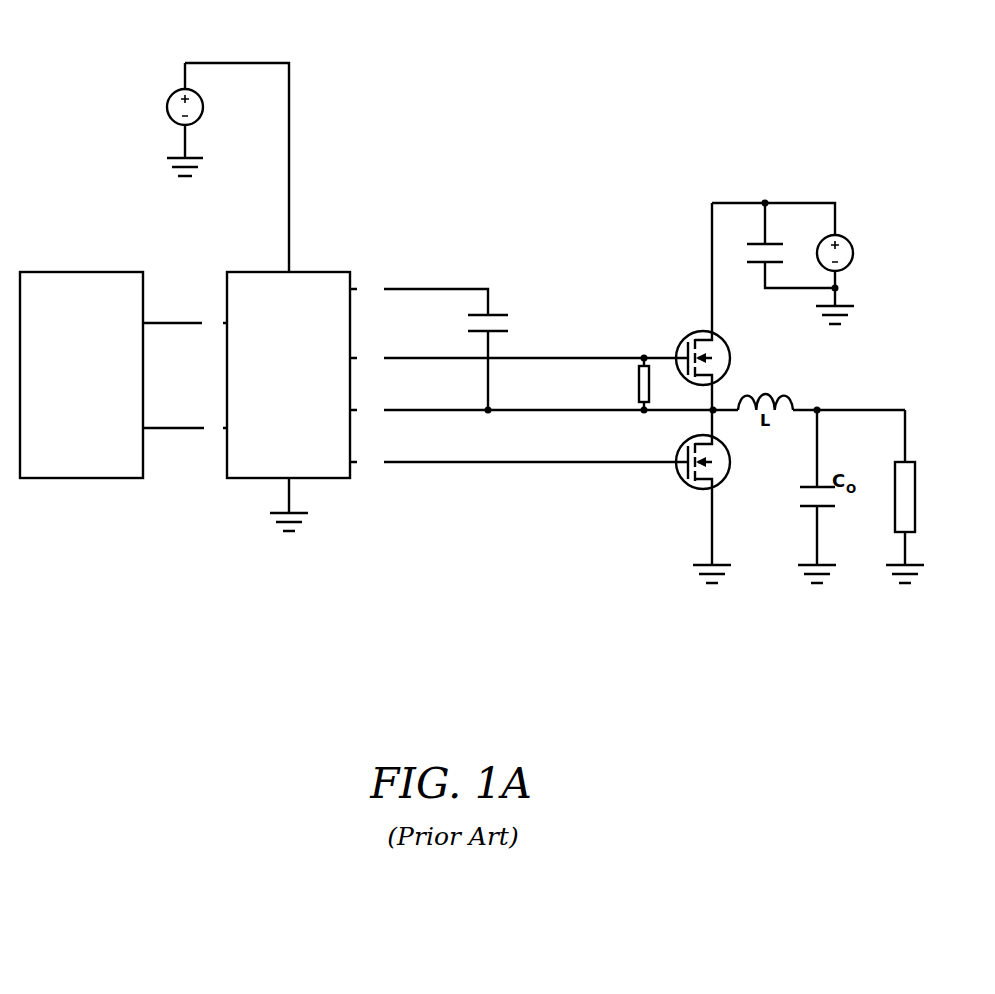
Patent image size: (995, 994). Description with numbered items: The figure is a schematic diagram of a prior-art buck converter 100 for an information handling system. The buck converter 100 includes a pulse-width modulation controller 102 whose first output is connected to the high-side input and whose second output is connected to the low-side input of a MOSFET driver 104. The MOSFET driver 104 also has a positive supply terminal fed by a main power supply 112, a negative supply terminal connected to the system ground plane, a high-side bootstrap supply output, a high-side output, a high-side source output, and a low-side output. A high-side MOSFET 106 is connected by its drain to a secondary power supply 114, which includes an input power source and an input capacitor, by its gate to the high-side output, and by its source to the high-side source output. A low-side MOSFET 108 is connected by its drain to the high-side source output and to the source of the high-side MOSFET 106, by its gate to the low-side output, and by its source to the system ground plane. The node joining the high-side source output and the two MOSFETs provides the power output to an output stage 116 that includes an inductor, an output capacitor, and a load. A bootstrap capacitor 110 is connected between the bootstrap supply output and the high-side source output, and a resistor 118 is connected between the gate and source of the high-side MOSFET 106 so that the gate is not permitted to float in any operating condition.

The buck converter 100 is at (88, 647).
The pulse-width modulation (PWM) controller 102 is at (33, 271).
The MOSFET driver 104 is at (240, 271).
The high-side MOSFET (QH) 106 is at (685, 346).
The low-side MOSFET (QL) 108 is at (685, 451).
The bootstrap capacitor (CB) 110 is at (507, 333).
The main power supply (VDD) 112 is at (156, 70).
The secondary power supply 114 is at (795, 181).
The output stage 116 is at (873, 391).
The resistor (R1) 118 is at (650, 385).